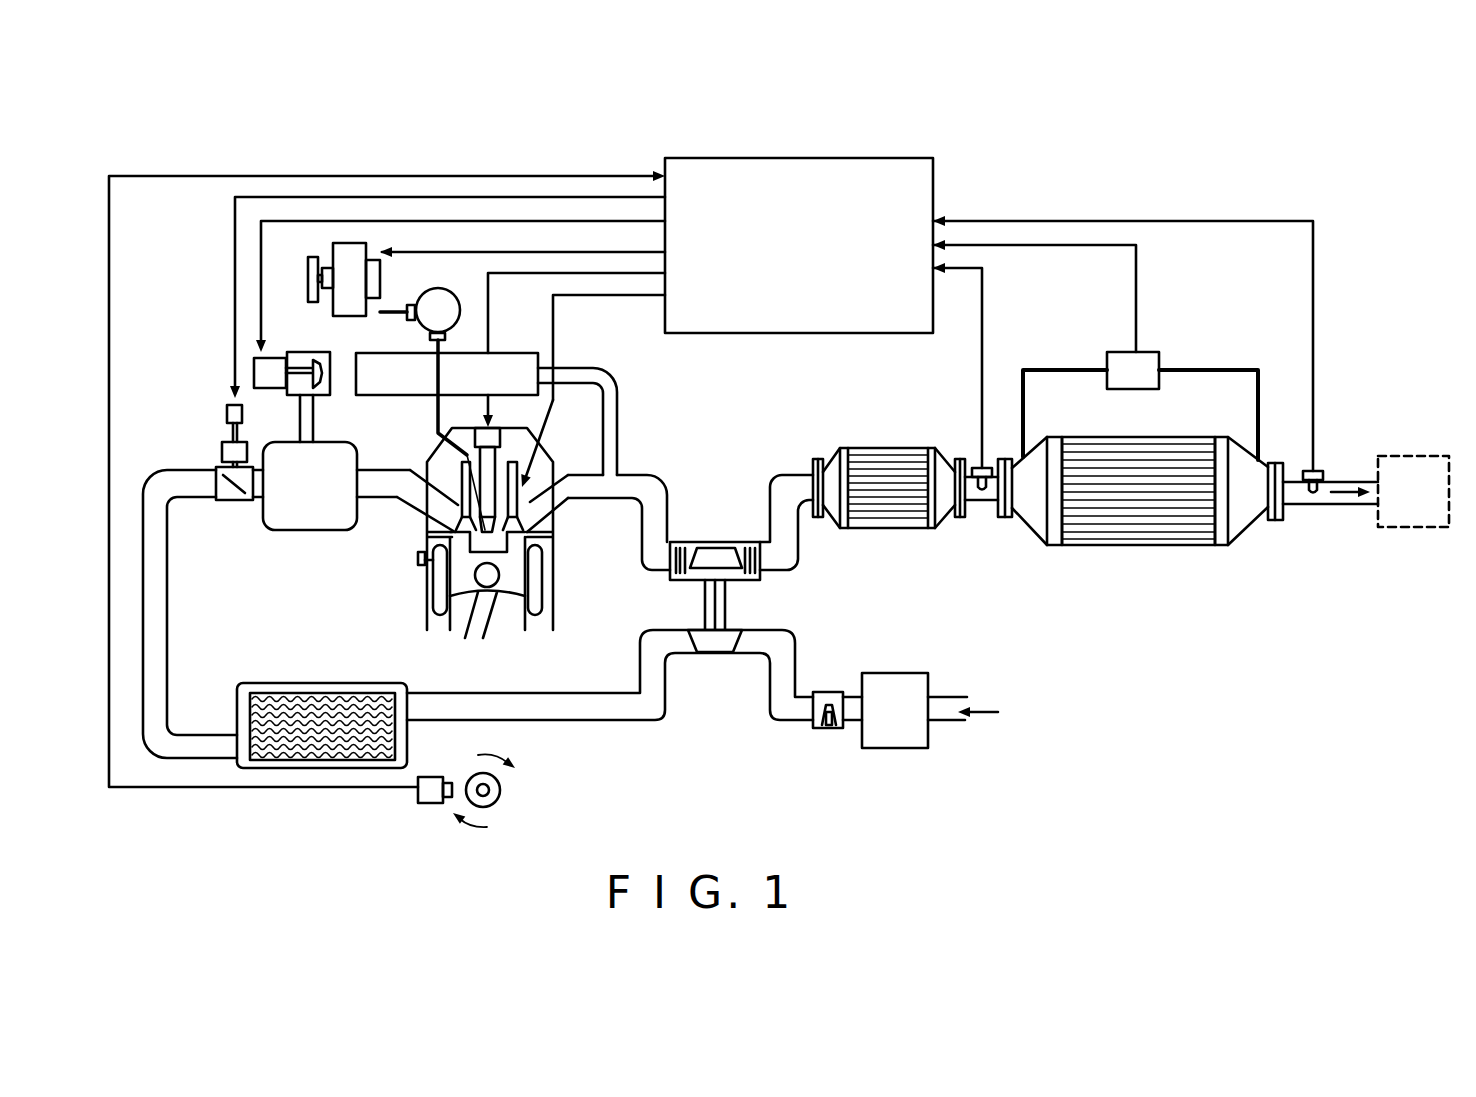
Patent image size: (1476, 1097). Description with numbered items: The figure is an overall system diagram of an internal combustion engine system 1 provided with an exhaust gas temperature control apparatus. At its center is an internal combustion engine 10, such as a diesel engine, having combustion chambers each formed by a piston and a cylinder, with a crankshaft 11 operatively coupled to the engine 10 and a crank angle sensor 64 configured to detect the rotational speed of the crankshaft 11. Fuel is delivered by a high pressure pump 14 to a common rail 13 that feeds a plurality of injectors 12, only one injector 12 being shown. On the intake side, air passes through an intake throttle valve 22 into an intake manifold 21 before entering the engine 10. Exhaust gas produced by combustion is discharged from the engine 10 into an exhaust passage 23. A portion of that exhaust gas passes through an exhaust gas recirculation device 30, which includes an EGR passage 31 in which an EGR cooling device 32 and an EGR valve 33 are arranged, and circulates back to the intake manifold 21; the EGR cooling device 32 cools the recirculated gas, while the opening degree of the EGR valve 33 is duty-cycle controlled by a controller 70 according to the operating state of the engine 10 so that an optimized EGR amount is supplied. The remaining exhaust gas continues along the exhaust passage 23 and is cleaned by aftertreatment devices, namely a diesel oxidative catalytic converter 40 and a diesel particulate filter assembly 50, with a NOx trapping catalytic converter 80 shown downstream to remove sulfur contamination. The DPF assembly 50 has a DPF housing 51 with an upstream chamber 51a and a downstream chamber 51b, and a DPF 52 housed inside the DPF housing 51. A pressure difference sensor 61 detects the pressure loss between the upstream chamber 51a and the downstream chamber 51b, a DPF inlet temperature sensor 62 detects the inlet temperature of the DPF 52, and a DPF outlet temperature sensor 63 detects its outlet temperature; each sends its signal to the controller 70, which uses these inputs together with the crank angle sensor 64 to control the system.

The internal combustion engine system 1 is at (1368, 178).
The internal combustion engine 10 is at (552, 543).
The crankshaft 11 is at (500, 792).
The injector 12 is at (492, 463).
The common rail 13 is at (445, 298).
The high pressure pump 14 is at (347, 312).
The intake manifold 21 is at (388, 488).
The intake throttle valve 22 is at (230, 498).
The exhaust passage 23 is at (647, 482).
The exhaust gas recirculation (EGR) device 30 is at (626, 364).
The EGR passage 31 is at (613, 397).
The EGR cooling device 32 is at (517, 360).
The EGR valve 33 is at (302, 358).
The diesel oxidative catalytic converter (DOC) 40 is at (875, 448).
The diesel particulate filter (DPF) assembly 50 is at (1147, 563).
The DPF housing 51 is at (1088, 545).
The upstream chamber 51a is at (1033, 545).
The downstream chamber 51b is at (1226, 535).
The DPF 52 is at (1140, 525).
The pressure difference sensor 61 is at (1146, 362).
The DPF inlet temperature sensor 62 is at (985, 468).
The DPF outlet temperature sensor 63 is at (1316, 471).
The crank angle sensor 64 is at (433, 803).
The controller 70 is at (880, 170).
The NOx trapping catalytic converter 80 is at (1408, 527).